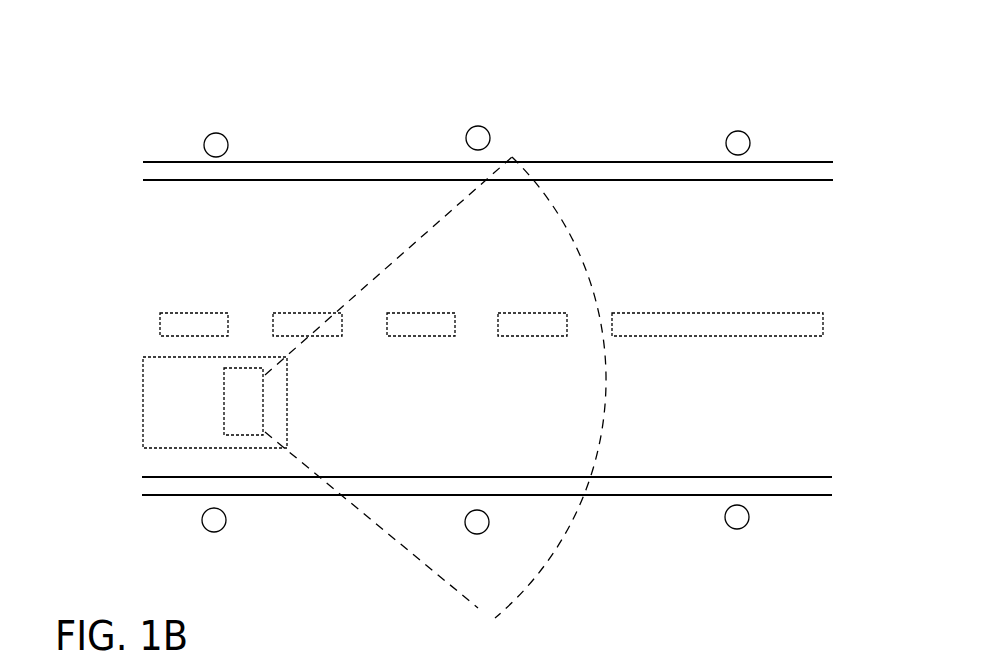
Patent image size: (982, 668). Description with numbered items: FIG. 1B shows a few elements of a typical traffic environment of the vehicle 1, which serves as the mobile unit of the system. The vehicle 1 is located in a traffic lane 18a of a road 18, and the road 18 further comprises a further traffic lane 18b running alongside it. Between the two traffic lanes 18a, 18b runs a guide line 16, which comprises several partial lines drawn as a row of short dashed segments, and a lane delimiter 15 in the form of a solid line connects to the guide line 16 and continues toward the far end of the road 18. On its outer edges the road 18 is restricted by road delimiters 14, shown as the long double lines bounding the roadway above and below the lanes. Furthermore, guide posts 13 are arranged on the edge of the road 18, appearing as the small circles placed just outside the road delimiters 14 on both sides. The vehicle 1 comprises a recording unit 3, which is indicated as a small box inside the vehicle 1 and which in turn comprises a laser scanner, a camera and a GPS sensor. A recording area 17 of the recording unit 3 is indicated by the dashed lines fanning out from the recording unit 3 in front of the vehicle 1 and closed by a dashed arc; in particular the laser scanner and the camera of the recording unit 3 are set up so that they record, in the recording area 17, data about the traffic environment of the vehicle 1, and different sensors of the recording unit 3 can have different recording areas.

The vehicle 1 is at (177, 413).
The recording unit 3 is at (236, 413).
The guide posts 13 is at (230, 138).
The road delimiters 14 is at (775, 160).
The lane delimiter 15 is at (815, 312).
The guide line 16 is at (297, 312).
The recording area 17 is at (588, 258).
The road 18 is at (138, 215).
The traffic lane 18a is at (806, 443).
The further traffic lane 18b is at (806, 195).